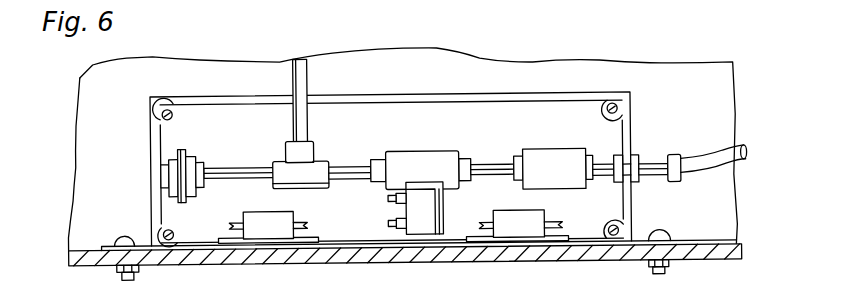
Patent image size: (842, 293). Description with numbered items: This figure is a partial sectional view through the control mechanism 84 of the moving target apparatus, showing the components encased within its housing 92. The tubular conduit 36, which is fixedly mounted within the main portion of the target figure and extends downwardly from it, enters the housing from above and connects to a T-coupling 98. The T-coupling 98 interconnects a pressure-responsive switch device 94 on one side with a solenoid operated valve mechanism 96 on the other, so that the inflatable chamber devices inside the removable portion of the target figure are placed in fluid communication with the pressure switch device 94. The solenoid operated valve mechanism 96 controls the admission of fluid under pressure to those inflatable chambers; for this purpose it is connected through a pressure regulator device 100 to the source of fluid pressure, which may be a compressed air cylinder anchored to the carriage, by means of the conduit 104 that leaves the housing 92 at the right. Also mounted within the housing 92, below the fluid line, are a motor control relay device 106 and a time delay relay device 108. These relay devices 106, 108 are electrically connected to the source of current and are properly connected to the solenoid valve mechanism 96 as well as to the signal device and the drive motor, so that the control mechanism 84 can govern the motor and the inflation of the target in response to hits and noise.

The tubular conduit 36 is at (309, 84).
The control mechanism 84 is at (515, 85).
The housing 92 is at (477, 71).
The pressure-responsive switch device 94 is at (204, 163).
The solenoid operated valve mechanism 96 is at (426, 169).
The T-coupling 98 is at (314, 183).
The pressure regulator device 100 is at (553, 168).
The conduit 104 is at (715, 159).
The motor control relay device 106 is at (268, 227).
The time delay relay device 108 is at (517, 226).